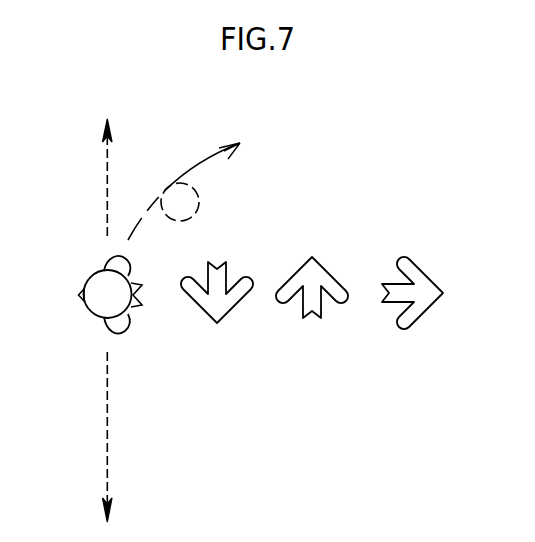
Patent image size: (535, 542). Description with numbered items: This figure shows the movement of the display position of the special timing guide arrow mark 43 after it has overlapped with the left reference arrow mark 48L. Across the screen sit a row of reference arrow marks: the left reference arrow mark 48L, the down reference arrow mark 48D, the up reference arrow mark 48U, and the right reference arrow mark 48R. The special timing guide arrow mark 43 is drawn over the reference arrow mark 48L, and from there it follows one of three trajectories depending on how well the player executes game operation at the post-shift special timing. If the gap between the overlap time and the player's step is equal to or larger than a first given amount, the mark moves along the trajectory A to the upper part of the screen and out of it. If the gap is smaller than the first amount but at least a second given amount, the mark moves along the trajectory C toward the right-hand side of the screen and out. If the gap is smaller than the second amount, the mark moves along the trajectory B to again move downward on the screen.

The special timing guide arrow mark 43 is at (97, 318).
The reference arrow mark 48L is at (104, 268).
The reference arrow mark 48D is at (237, 309).
The reference arrow mark 48U is at (322, 311).
The reference arrow mark 48R is at (430, 313).
The trajectory A is at (105, 165).
The trajectory B is at (105, 455).
The trajectory C is at (184, 174).